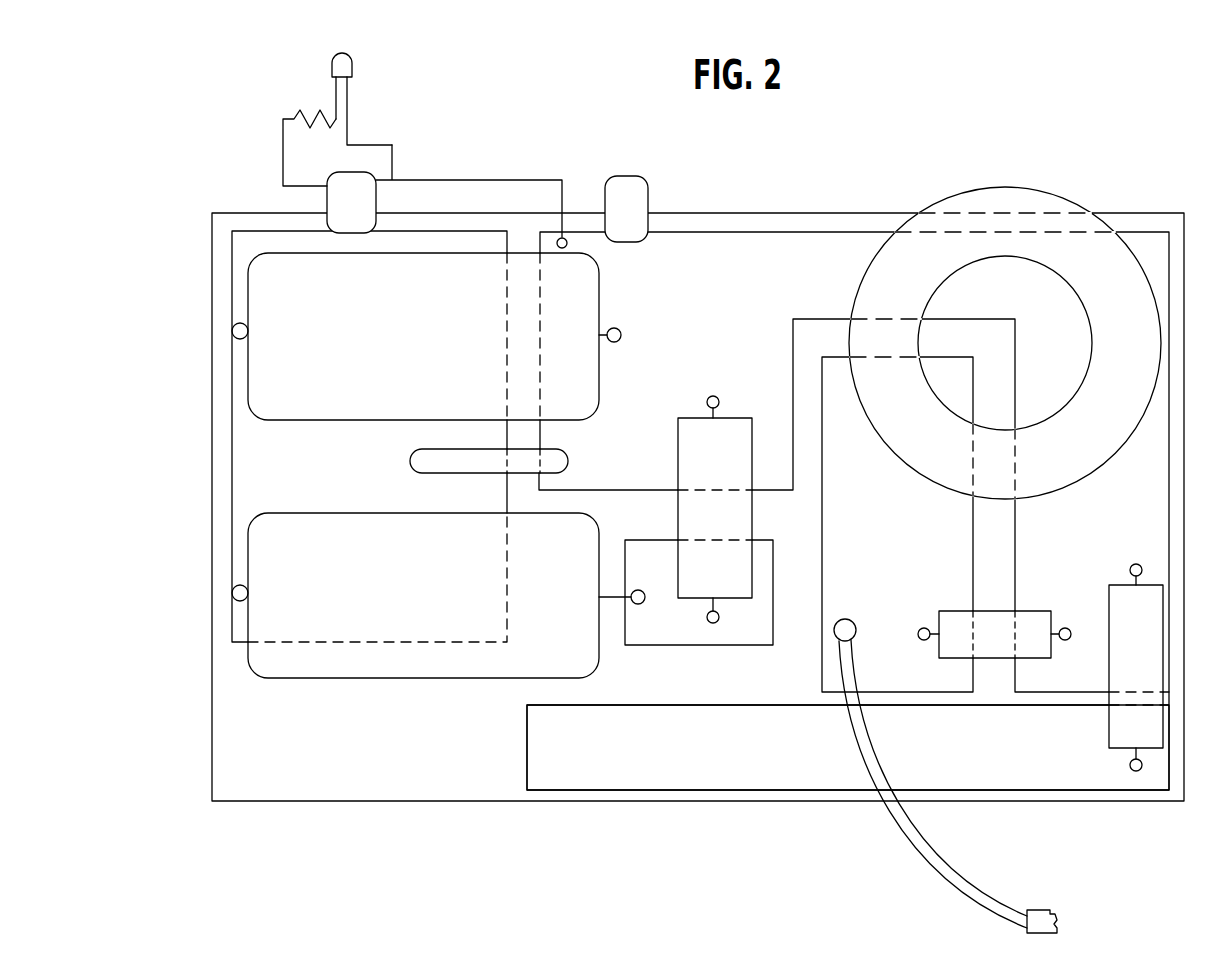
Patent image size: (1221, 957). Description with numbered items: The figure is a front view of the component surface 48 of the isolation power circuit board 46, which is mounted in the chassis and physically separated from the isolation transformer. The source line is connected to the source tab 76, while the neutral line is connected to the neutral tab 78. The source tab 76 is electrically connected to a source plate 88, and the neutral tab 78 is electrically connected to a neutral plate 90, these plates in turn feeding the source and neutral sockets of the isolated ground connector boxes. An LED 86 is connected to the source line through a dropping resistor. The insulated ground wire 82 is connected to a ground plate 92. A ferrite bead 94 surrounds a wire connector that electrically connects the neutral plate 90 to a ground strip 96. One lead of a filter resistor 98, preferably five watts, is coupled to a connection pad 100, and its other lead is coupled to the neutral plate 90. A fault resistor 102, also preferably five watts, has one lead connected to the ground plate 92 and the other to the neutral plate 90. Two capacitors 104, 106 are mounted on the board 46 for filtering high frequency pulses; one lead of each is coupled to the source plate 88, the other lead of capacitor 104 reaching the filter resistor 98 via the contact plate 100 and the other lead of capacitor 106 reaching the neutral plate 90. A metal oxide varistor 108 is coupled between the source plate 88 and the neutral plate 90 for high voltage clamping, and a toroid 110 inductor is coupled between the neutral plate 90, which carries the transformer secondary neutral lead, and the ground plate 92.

The isolation power circuit board 46 is at (914, 186).
The component surface 48 is at (760, 222).
The source tab 76 is at (367, 172).
The neutral tab 78 is at (622, 182).
The insulated ground wire 82 is at (898, 826).
The LED 86 is at (355, 56).
The source plate 88 is at (444, 247).
The neutral plate 90 is at (1146, 238).
The ground plate 92 is at (828, 608).
The ferrite bead 94 is at (1120, 598).
The ground strip 96 is at (1034, 770).
The filter resistor 98 is at (692, 428).
The connection pad 100 is at (648, 628).
The fault resistor 102 is at (993, 625).
The capacitor 104 is at (283, 523).
The capacitor 106 is at (280, 265).
The metal oxide varistor 108 is at (410, 470).
The toroid 110 is at (1028, 198).